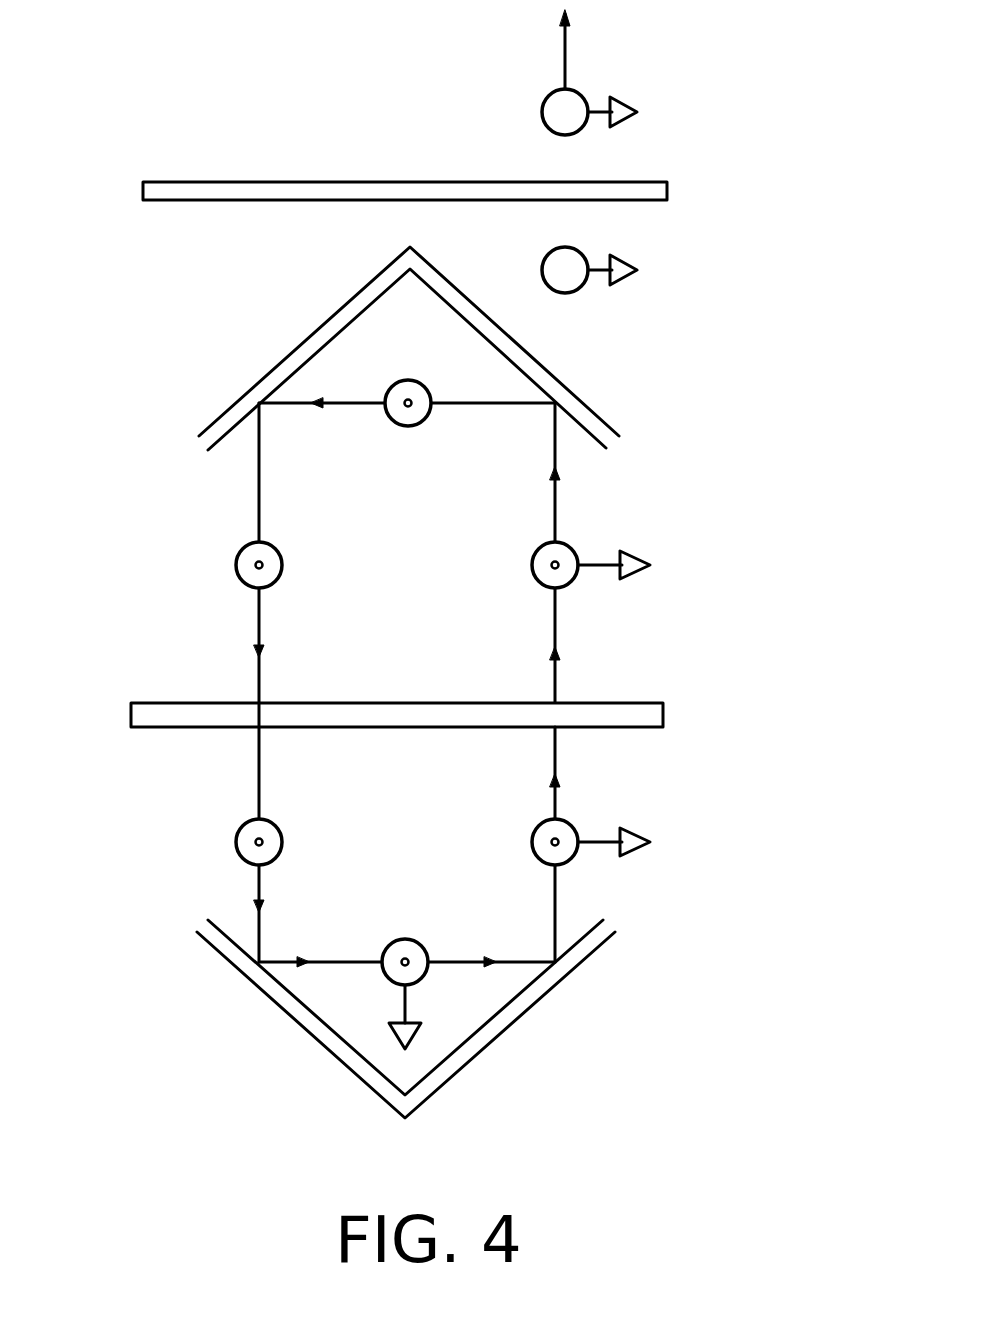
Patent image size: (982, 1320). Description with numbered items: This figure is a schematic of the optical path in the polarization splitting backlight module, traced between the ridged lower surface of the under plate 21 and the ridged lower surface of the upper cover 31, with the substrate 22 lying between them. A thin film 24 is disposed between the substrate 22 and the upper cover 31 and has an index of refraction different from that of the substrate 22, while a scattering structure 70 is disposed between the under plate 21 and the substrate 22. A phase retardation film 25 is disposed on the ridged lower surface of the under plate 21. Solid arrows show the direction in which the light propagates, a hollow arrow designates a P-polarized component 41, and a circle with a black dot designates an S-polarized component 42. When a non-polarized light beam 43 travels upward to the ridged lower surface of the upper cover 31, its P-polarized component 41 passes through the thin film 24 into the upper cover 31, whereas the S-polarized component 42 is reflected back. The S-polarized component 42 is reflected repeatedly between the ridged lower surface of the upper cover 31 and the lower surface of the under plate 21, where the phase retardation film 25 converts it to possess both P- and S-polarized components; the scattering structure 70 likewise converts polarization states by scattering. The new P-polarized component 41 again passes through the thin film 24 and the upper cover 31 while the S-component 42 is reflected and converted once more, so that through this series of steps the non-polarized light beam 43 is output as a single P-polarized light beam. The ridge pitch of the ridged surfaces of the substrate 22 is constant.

The under plate 21 is at (638, 793).
The substrate 22 is at (640, 632).
The thin film 24 is at (485, 348).
The phase retardation film 25 is at (518, 1020).
The upper cover 31 is at (550, 343).
The P-polarized component 41 is at (625, 253).
The S-polarized component 42 is at (408, 427).
The non-polarized light beam 43 is at (575, 542).
The scattering structure 70 is at (168, 712).